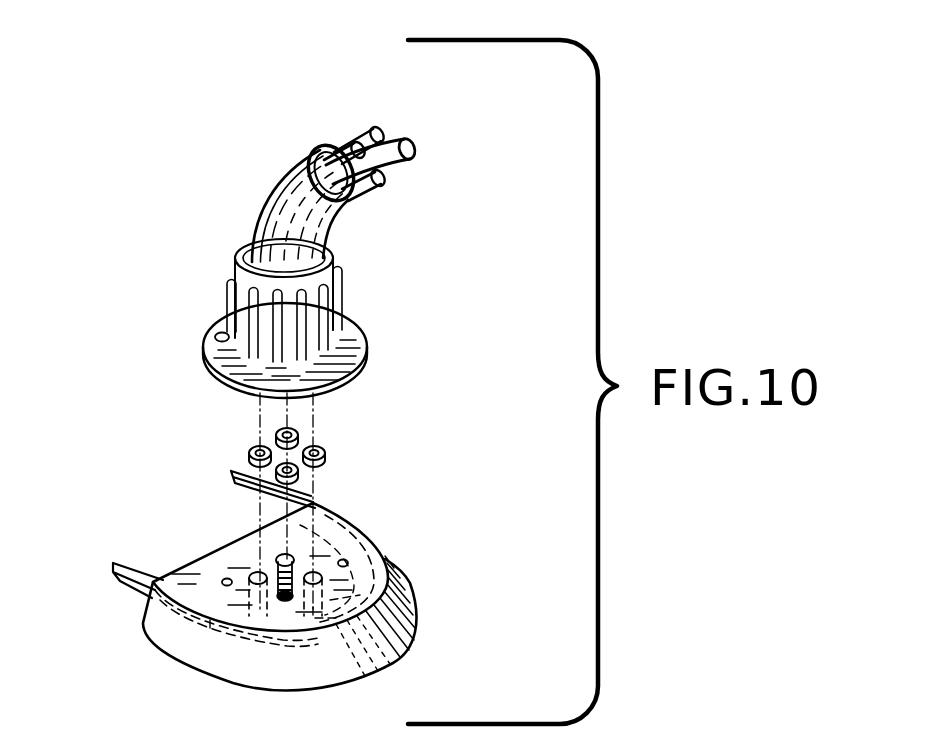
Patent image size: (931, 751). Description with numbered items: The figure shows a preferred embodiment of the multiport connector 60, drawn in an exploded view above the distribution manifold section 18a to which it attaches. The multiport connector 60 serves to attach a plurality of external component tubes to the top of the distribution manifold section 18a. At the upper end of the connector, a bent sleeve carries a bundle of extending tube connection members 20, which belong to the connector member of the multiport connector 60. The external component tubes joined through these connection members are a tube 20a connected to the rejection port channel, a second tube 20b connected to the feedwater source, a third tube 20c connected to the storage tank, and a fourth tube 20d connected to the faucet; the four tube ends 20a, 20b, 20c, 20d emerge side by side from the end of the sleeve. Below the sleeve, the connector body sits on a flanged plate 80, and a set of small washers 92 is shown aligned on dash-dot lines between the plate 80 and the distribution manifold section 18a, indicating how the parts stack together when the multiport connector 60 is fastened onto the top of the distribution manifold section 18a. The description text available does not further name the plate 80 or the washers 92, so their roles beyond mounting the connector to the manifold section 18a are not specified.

The distribution manifold section 18a is at (224, 659).
The tube connection members 20 is at (422, 116).
The tube 20a is at (386, 192).
The second tube 20b is at (415, 148).
The third tube 20c is at (310, 153).
The fourth tube 20d is at (360, 130).
The multiport connector 60 is at (208, 239).
The mounting plate 80 is at (352, 323).
The washers 92 is at (325, 450).